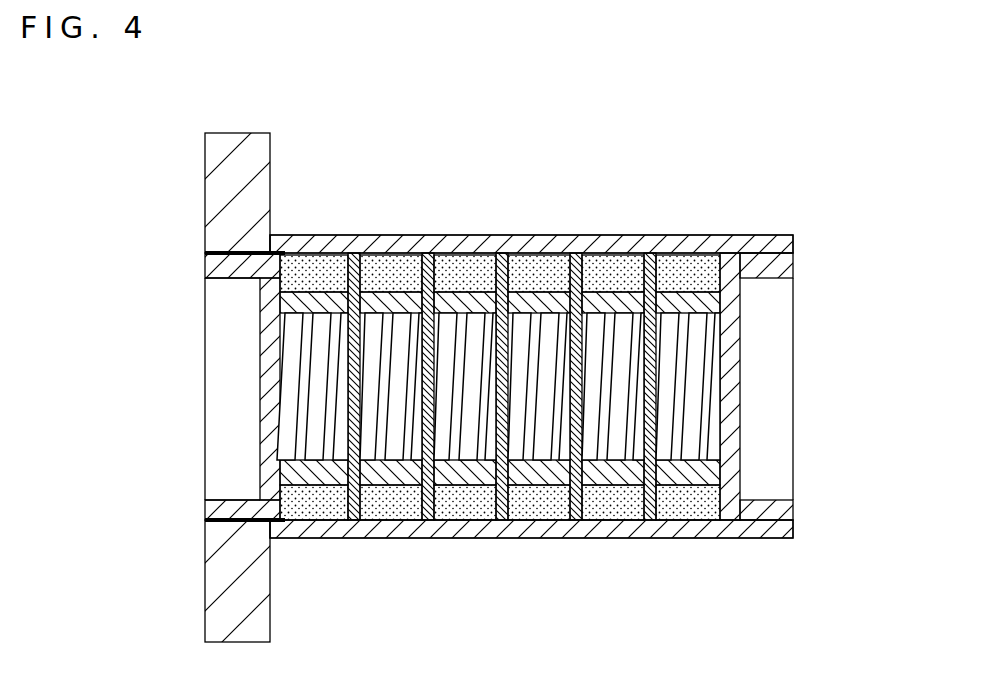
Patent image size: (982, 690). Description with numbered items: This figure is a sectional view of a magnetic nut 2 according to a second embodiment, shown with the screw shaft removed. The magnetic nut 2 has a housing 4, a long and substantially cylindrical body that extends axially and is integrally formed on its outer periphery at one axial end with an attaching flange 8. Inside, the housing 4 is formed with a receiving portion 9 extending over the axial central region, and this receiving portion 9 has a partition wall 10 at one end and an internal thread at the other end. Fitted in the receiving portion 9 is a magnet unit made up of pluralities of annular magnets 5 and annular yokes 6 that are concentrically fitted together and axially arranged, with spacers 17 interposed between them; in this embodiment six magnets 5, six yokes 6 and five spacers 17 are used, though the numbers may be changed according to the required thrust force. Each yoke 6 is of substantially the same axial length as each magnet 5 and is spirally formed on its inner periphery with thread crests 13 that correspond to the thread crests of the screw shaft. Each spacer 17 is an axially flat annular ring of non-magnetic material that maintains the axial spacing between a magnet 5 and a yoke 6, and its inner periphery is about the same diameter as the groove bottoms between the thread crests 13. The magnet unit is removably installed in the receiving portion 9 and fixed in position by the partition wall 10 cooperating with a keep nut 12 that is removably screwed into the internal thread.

The magnetic nut 2 is at (557, 228).
The housing 4 is at (448, 248).
The annular magnet 5 is at (317, 258).
The annular yoke 6 is at (337, 473).
The attaching flange 8 is at (228, 185).
The receiving portion 9 is at (479, 518).
The partition wall 10 is at (738, 304).
The keep nut 12 is at (215, 521).
The thread crest 13 is at (380, 321).
The spacer 17 is at (423, 259).